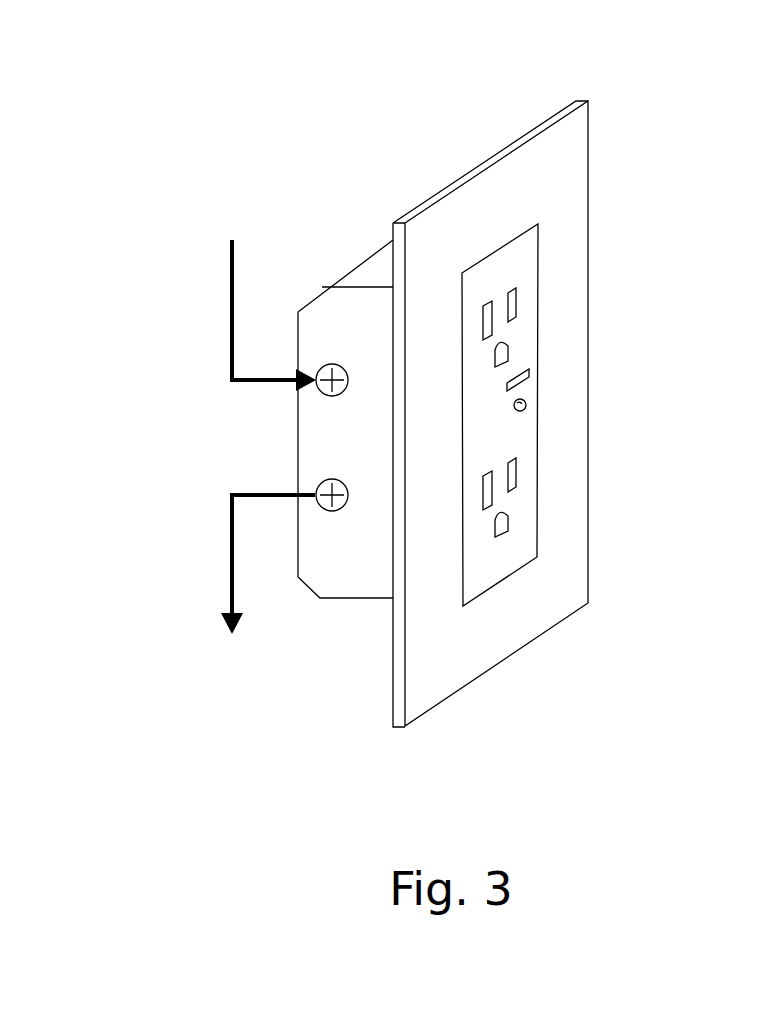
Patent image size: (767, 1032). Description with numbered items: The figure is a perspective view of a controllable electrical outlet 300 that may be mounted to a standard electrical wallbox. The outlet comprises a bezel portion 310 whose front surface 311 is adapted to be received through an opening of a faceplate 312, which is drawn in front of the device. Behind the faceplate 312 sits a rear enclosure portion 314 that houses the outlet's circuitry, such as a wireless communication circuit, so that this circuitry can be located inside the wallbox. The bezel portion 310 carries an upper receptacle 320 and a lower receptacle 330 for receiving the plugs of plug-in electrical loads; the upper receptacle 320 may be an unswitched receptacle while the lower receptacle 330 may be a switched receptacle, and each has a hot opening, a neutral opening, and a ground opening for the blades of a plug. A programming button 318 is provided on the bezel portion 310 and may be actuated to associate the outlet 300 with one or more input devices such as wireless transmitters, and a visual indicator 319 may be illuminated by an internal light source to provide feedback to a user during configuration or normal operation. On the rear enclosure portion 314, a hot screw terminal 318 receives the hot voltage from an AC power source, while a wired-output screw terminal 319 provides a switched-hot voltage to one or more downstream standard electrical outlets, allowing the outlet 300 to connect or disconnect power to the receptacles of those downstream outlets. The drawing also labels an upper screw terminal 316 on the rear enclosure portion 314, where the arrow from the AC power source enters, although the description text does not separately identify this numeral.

The controllable electrical outlet 300 is at (405, 93).
The bezel portion 310 is at (523, 513).
The front surface 311 is at (473, 447).
The faceplate 312 is at (555, 315).
The rear enclosure portion 314 is at (325, 442).
The input terminal screw 316 is at (320, 392).
The programming button 318 is at (529, 373).
The visual indicator 319 is at (524, 410).
The upper receptacle 320 is at (495, 282).
The lower receptacle 330 is at (510, 547).